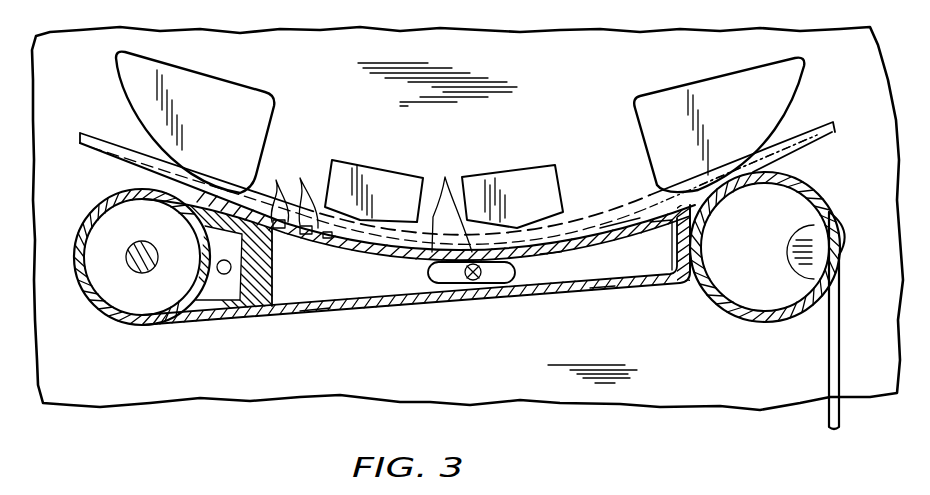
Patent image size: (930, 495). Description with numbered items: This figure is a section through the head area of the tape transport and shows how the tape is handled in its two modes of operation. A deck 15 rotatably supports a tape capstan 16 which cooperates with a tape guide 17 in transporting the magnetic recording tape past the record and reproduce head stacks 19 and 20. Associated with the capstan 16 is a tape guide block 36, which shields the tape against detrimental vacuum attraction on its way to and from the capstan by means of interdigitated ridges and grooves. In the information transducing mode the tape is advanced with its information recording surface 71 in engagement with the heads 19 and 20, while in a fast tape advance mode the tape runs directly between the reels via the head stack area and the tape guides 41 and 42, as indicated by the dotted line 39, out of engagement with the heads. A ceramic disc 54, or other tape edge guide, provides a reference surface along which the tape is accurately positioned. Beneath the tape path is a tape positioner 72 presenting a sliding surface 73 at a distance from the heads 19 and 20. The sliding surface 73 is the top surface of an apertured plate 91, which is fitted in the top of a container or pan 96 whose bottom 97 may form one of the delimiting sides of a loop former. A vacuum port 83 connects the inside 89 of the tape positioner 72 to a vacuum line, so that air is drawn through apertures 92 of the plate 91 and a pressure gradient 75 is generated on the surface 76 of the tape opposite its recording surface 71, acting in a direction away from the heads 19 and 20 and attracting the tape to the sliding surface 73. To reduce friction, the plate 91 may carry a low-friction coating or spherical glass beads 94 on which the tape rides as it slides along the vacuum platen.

The deck 15 is at (138, 392).
The tape capstan 16 is at (100, 294).
The tape guide 17 is at (726, 316).
The head stack 19 is at (527, 182).
The head stack 20 is at (392, 178).
The tape guide block 36 is at (218, 322).
The dotted line 39 is at (110, 156).
The tape guide 41 is at (660, 100).
The tape guide 42 is at (218, 80).
The ceramic disc 54 is at (842, 232).
The information recording surface 71 is at (782, 143).
The tape positioner 72 is at (328, 312).
The sliding surface 73 is at (613, 225).
The pressure gradient 75 is at (380, 236).
The tape surface 76 is at (760, 160).
The port 83 is at (499, 275).
The inside of the tape positioner 89 is at (603, 282).
The apertured plate 91 is at (545, 252).
The apertures 92 is at (444, 180).
The glass beads 94 is at (282, 184).
The pan 96 is at (648, 272).
The bottom 97 is at (430, 303).